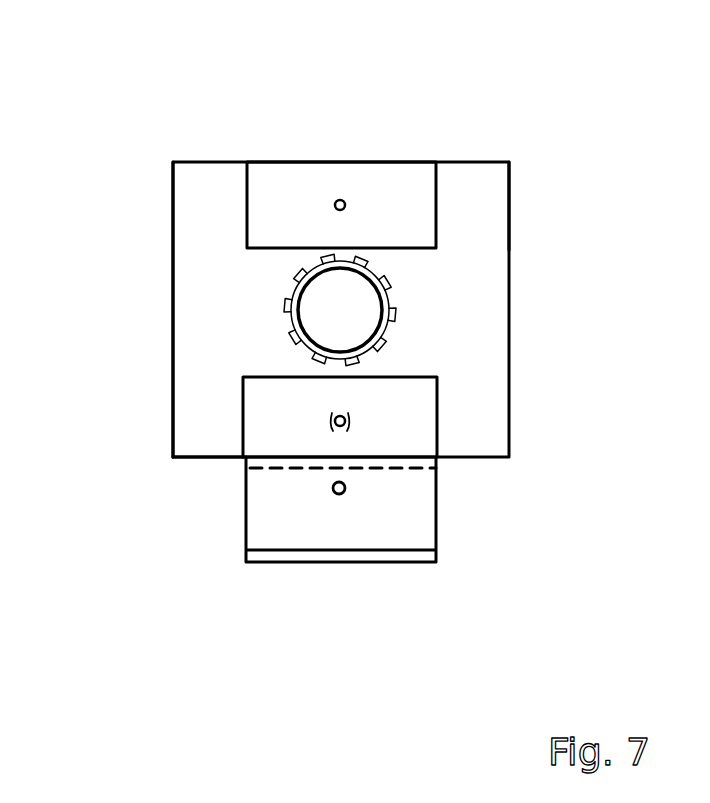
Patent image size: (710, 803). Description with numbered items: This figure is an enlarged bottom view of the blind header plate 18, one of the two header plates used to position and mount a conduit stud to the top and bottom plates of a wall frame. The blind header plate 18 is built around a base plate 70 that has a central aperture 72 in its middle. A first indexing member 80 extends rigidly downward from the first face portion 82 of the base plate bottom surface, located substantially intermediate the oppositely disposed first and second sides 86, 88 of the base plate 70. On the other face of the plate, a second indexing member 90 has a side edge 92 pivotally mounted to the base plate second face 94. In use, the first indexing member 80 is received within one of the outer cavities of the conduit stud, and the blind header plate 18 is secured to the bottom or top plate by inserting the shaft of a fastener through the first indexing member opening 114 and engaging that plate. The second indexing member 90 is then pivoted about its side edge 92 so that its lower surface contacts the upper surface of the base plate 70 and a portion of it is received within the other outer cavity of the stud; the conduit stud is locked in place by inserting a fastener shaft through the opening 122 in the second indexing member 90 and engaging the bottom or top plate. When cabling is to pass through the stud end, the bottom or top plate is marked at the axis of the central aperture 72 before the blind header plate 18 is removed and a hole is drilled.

The blind header plate 18 is at (540, 98).
The base plate 70 is at (511, 322).
The central aperture 72 is at (340, 309).
The first indexing member 80 is at (302, 188).
The first face portion 82 is at (511, 190).
The first side 86 is at (172, 308).
The second side 88 is at (511, 380).
The second indexing member 90 is at (437, 512).
The side edge 92 is at (282, 476).
The second face 94 is at (205, 458).
The first indexing member opening 114 is at (346, 202).
The opening 122 is at (345, 488).